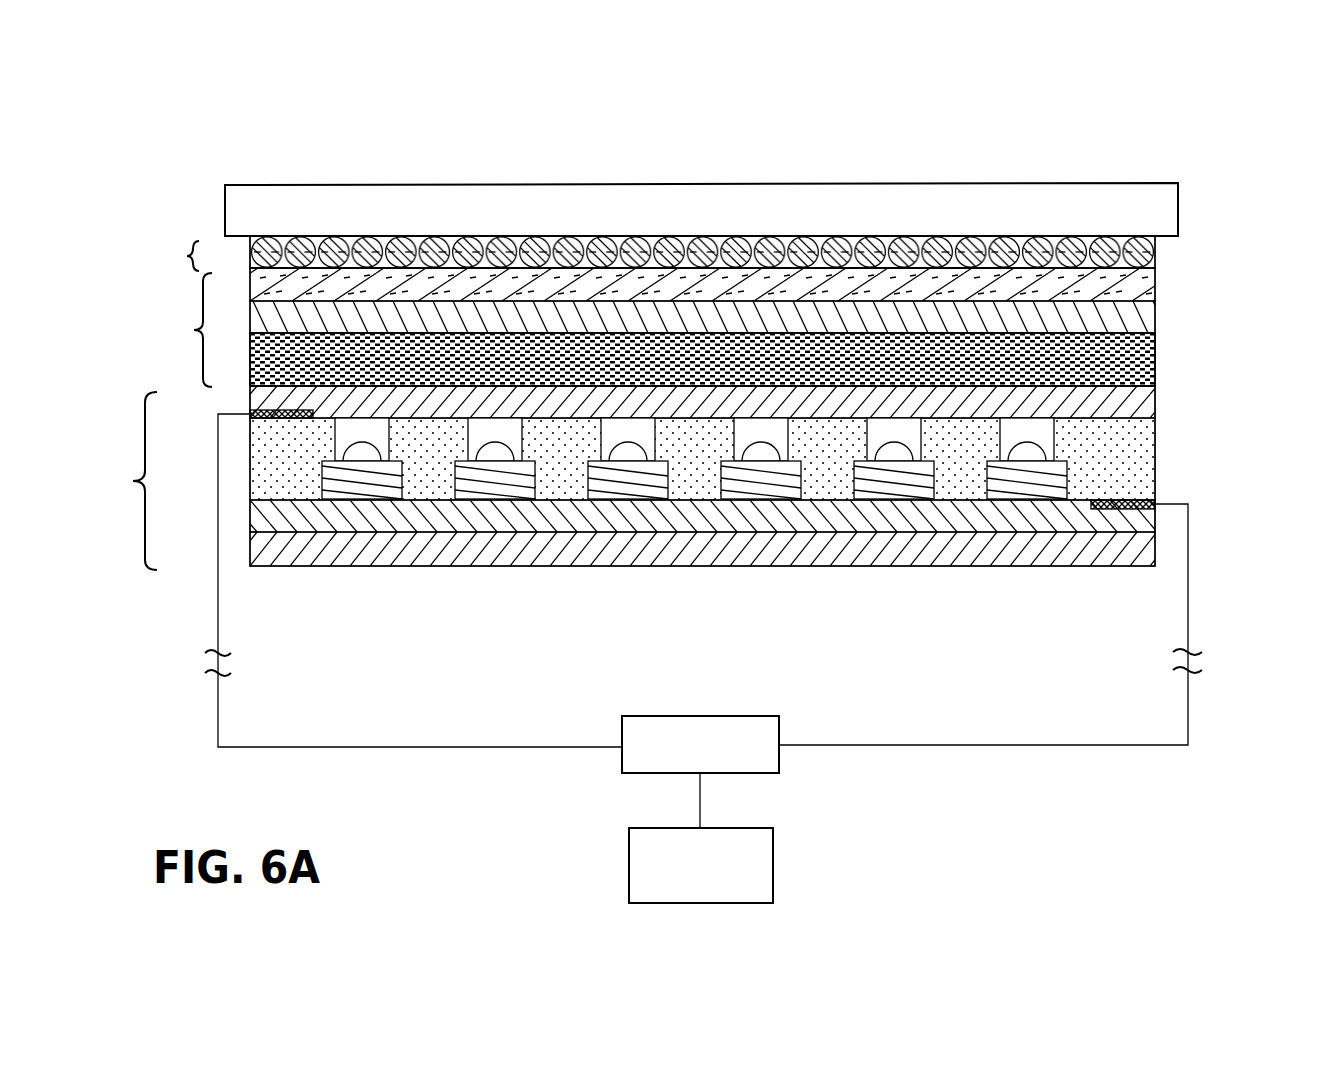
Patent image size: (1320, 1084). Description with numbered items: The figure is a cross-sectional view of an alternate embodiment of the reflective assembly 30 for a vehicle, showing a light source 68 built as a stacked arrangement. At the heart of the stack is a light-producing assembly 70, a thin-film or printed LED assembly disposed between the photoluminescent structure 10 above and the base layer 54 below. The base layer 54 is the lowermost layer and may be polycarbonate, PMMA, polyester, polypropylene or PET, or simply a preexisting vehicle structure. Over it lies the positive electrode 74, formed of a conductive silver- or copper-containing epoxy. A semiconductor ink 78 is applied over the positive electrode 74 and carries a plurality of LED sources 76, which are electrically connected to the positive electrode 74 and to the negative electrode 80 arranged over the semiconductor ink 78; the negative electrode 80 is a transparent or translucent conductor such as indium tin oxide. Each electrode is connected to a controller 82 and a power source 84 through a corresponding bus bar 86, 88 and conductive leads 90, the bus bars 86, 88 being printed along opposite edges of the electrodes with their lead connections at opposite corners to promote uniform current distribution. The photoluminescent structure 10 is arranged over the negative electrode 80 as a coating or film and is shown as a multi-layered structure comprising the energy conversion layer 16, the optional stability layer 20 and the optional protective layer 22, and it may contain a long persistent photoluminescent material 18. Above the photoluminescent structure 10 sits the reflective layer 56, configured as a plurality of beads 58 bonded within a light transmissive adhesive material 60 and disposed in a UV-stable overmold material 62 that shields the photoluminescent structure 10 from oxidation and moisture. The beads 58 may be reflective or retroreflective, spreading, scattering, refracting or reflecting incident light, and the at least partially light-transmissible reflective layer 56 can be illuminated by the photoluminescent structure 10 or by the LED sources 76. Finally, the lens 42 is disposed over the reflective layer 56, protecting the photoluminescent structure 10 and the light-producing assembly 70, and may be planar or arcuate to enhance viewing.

The reflective assembly 30 is at (990, 120).
The lens 42 is at (1048, 203).
The overmold material 62 is at (1155, 233).
The beads 58 is at (1155, 248).
The reflective layer 56 is at (651, 254).
The light transmissive adhesive material 60 is at (1155, 256).
The protective layer 22 is at (1155, 280).
The stability layer 20 is at (1155, 317).
The energy conversion layer 16 is at (1155, 350).
The long persistent photoluminescent material 18 is at (1122, 365).
The photoluminescent structure 10 is at (653, 327).
The negative electrode 80 is at (1155, 398).
The semiconductor ink 78 is at (1155, 450).
The light source 68 is at (338, 500).
The LED sources 76 is at (469, 483).
The positive electrode 74 is at (1155, 520).
The base layer 54 is at (1155, 553).
The light-producing assembly 70 is at (624, 478).
The bus bar 88 is at (250, 411).
The bus bar 86 is at (1155, 502).
The conductive leads 90 is at (218, 614).
The controller 82 is at (779, 762).
The power source 84 is at (773, 847).